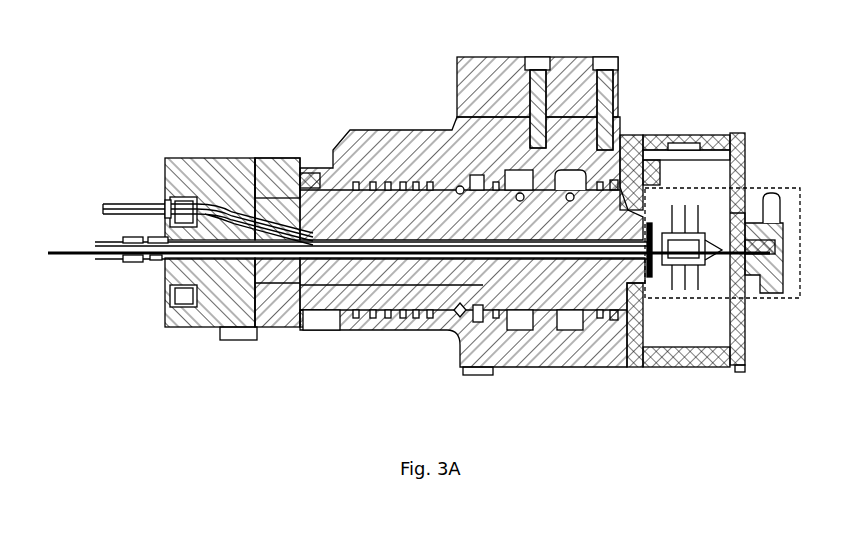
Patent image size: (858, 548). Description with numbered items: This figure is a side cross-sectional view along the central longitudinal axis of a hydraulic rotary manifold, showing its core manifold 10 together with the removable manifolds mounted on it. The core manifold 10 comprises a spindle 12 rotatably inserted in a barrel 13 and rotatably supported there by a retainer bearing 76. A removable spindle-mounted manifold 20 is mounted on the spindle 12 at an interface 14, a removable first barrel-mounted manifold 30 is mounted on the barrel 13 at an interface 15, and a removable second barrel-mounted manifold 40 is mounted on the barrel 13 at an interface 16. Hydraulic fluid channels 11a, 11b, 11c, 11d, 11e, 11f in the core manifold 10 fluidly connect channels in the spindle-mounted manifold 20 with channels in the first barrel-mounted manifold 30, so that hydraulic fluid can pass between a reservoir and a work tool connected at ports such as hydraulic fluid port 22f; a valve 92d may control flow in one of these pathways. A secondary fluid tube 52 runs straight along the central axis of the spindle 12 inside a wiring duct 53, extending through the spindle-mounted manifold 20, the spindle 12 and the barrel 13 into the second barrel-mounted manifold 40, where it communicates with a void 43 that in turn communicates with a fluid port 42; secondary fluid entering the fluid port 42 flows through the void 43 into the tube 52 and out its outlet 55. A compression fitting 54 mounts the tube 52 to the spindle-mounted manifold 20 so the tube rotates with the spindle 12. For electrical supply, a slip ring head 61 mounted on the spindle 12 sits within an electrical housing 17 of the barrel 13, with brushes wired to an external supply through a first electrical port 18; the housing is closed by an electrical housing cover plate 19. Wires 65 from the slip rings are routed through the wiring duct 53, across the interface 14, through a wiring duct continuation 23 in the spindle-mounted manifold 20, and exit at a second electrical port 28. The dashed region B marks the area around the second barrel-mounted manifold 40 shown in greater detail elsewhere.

The core manifold 10 is at (352, 75).
The first barrel-mounted manifold 30 is at (478, 57).
The interface 15 is at (455, 117).
The retainer bearing 76 is at (458, 186).
The wiring duct 53 is at (353, 240).
The electrical housing 17 is at (638, 135).
The first electrical port 18 is at (688, 143).
The electrical housing cover plate 19 is at (748, 150).
The interface 16 is at (745, 212).
The fluid port 42 is at (775, 197).
The void 43 is at (775, 244).
The second barrel-mounted manifold 40 is at (780, 262).
The detail region B is at (785, 298).
The slip ring head 61 is at (690, 268).
The barrel 13 is at (588, 352).
The hydraulic fluid channel 11c is at (573, 320).
The hydraulic fluid channel 11a is at (520, 322).
The valve 92d is at (483, 368).
The hydraulic fluid channel 11d is at (478, 315).
The hydraulic fluid channel 11b is at (427, 312).
The hydraulic fluid channel 11f is at (400, 312).
The hydraulic fluid channel 11e is at (372, 312).
The hydraulic fluid port 22f is at (165, 295).
The compression fitting 54 is at (160, 258).
The secondary fluid tube 52 is at (120, 255).
The outlet 55 is at (95, 250).
The wires 65 is at (125, 203).
The second electrical port 28 is at (165, 200).
The spindle-mounted manifold 20 is at (188, 158).
The wiring duct continuation 23 is at (222, 212).
The interface 14 is at (258, 158).
The spindle 12 is at (270, 160).